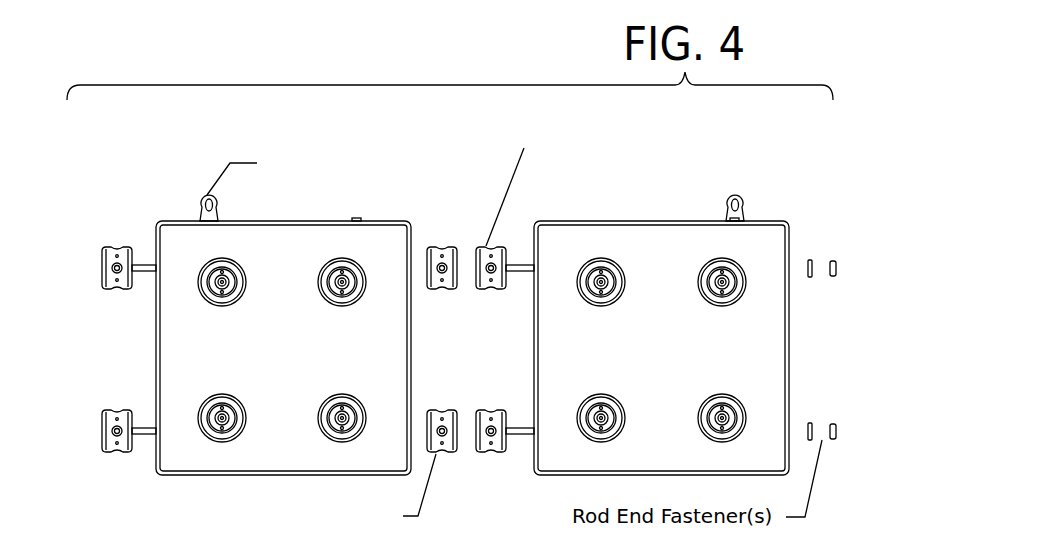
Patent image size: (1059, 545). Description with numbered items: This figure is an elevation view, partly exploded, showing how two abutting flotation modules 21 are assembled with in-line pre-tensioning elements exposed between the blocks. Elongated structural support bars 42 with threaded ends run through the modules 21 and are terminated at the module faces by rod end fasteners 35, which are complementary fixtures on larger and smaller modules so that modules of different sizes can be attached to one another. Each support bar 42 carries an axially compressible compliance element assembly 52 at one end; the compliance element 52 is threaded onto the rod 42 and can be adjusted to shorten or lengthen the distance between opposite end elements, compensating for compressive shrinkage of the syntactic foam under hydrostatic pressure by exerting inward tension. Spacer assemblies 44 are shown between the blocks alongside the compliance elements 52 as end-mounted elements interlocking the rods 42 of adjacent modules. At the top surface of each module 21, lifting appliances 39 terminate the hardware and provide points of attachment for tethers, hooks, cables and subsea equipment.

The module 21 is at (167, 462).
The bar 42 is at (146, 266).
The rod end fastener 35 is at (103, 268).
The spacer assembly 44 is at (447, 247).
The compliance element 52 is at (500, 290).
The lifting appliance 39 is at (743, 193).